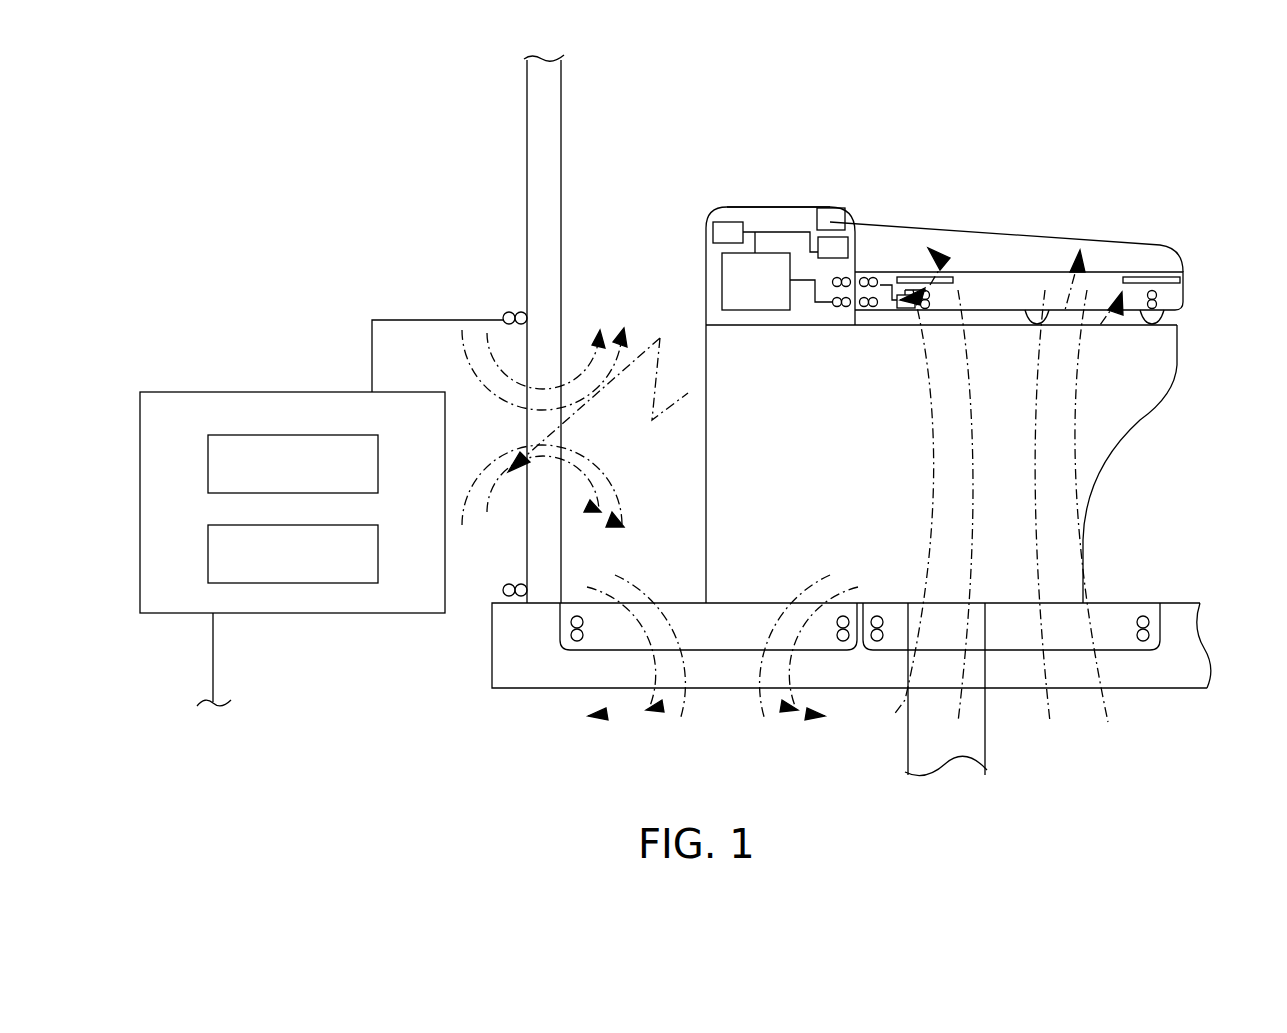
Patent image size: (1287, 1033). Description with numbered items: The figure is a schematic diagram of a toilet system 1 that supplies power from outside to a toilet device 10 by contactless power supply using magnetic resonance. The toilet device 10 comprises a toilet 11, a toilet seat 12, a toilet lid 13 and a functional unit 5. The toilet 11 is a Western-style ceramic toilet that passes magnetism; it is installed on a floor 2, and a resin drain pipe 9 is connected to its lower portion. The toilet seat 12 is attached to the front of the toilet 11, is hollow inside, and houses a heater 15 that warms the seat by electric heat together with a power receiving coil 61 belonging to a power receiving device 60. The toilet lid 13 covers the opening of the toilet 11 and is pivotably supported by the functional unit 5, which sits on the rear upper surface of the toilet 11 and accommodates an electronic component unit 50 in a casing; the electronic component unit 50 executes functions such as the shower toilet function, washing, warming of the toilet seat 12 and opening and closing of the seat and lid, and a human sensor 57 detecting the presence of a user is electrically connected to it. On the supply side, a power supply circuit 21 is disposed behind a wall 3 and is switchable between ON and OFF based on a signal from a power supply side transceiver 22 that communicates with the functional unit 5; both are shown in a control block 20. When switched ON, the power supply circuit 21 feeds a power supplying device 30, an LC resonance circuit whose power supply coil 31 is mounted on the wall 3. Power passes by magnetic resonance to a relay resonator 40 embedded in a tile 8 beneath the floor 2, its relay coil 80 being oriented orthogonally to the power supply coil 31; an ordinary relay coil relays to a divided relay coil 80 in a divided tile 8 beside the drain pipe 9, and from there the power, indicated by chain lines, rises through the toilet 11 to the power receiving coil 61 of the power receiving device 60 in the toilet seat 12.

The toilet system 1 is at (1240, 110).
The floor 2 is at (1140, 593).
The wall 3 is at (541, 109).
The functional unit 5 is at (777, 212).
The tile 8 is at (602, 645).
The drain pipe 9 is at (965, 737).
The toilet device 10 is at (713, 203).
The toilet 11 is at (1123, 413).
The toilet seat 12 is at (1182, 293).
The toilet lid 13 is at (1033, 262).
The heater 15 is at (1155, 276).
The control unit 20 is at (292, 549).
The power supply circuit 21 is at (378, 454).
The power supply side transceiver 22 is at (378, 546).
The power supplying device 30 is at (495, 298).
The power supply coil 31 is at (521, 308).
The relay resonator 40 is at (846, 650).
The electronic component unit 50 is at (702, 288).
The human sensor 57 is at (828, 213).
The power receiving device 60 is at (888, 258).
The power receiving coil 61 is at (923, 258).
The relay coil 80 is at (572, 640).